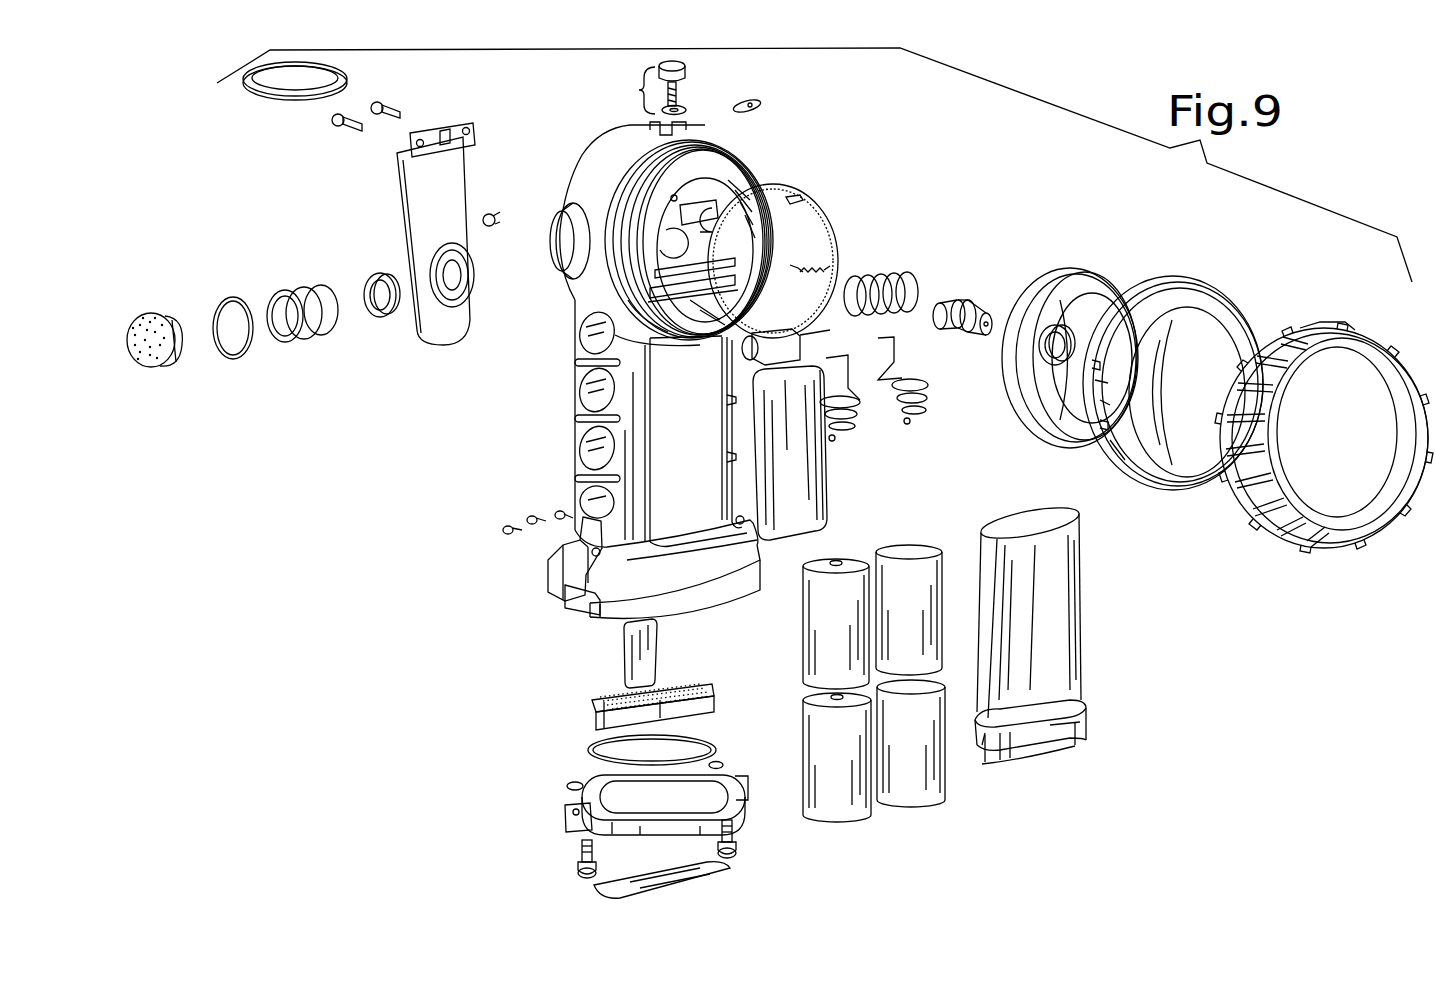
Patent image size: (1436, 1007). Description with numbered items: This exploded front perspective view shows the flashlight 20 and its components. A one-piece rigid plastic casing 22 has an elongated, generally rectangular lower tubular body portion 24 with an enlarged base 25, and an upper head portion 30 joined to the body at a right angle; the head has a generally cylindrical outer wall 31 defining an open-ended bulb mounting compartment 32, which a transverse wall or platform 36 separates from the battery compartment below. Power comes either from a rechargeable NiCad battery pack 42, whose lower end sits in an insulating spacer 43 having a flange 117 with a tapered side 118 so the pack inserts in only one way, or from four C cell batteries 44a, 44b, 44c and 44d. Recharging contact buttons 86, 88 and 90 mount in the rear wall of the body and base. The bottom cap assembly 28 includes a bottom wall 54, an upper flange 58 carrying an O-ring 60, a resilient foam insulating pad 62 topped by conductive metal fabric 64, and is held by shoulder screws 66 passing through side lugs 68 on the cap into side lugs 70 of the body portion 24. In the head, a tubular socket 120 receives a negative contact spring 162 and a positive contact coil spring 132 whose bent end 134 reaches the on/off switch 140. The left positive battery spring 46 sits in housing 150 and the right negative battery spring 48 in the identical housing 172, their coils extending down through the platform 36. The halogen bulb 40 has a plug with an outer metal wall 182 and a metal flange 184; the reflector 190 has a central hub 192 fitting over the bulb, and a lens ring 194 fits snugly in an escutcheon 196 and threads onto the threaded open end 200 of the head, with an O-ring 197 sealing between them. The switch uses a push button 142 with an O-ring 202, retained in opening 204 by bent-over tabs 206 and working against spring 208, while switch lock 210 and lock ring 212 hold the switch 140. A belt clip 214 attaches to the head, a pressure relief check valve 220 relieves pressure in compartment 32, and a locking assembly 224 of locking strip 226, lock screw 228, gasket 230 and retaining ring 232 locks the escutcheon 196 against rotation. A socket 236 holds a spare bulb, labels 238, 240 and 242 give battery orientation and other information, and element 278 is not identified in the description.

The flashlight 20 is at (550, 418).
The casing 22 is at (562, 348).
The lower tubular body portion 24 is at (699, 453).
The base 25 is at (697, 598).
The bottom cap assembly 28 is at (522, 752).
The head portion 30 is at (625, 162).
The outer wall 31 is at (722, 148).
The bulb mounting compartment 32 is at (718, 196).
The transverse wall or platform 36 is at (735, 310).
The bulb 40 is at (989, 320).
The battery pack 42 is at (1063, 606).
The insulating spacer 43 is at (1088, 727).
The C cell alkaline battery 44a is at (855, 610).
The C cell alkaline battery 44b is at (858, 747).
The C cell alkaline battery 44c is at (928, 595).
The C cell alkaline battery 44d is at (932, 731).
The left positive battery spring 46 is at (840, 435).
The right negative battery spring 48 is at (912, 423).
The bottom wall 54 is at (620, 798).
The upper flange 58 is at (722, 782).
The O-ring 60 is at (597, 749).
The foam insulating pad 62 is at (605, 722).
The electrically conductive metal fabric material 64 is at (612, 700).
The shoulder screws 66 is at (580, 852).
The side lugs 68 is at (578, 813).
The side lugs 70 is at (570, 566).
The recharging spring contact button 86 is at (559, 511).
The recharging spring contact button 88 is at (530, 516).
The recharging spring contact button 90 is at (504, 527).
The flange 117 is at (1050, 728).
The tapered side 118 is at (985, 748).
The tubular socket 120 is at (720, 238).
The positive contact coil spring 132 is at (826, 266).
The bent end 134 is at (787, 262).
The on/off switch 140 is at (830, 325).
The push button 142 is at (150, 366).
The compartment 150 is at (722, 285).
The negative contact spring 162 is at (885, 282).
The spring housing 172 is at (728, 262).
The outer metal wall 182 is at (945, 302).
The metal flange 184 is at (968, 302).
The reflector 190 is at (1106, 270).
The central hub 192 is at (1054, 326).
The lens ring 194 is at (1215, 298).
The escutcheon 196 is at (1355, 306).
The O-ring 197 is at (795, 190).
The threaded open end 200 is at (660, 337).
The O-ring 202 is at (246, 352).
The opening 204 is at (556, 246).
The bent over tabs 206 is at (172, 312).
The spring 208 is at (338, 322).
The switch lock 210 is at (476, 272).
The lock ring 212 is at (383, 318).
The belt clip 214 is at (455, 194).
The pressure relief check valve 220 is at (500, 204).
The locking assembly 224 is at (627, 90).
The locking strip 226 is at (760, 102).
The lock screw 228 is at (686, 72).
The gasket 230 is at (688, 113).
The retaining ring 232 is at (805, 198).
The socket 236 is at (306, 100).
The label 238 is at (625, 658).
The label 240 is at (818, 470).
The label 242 is at (680, 866).
The foot pad 278 is at (590, 610).